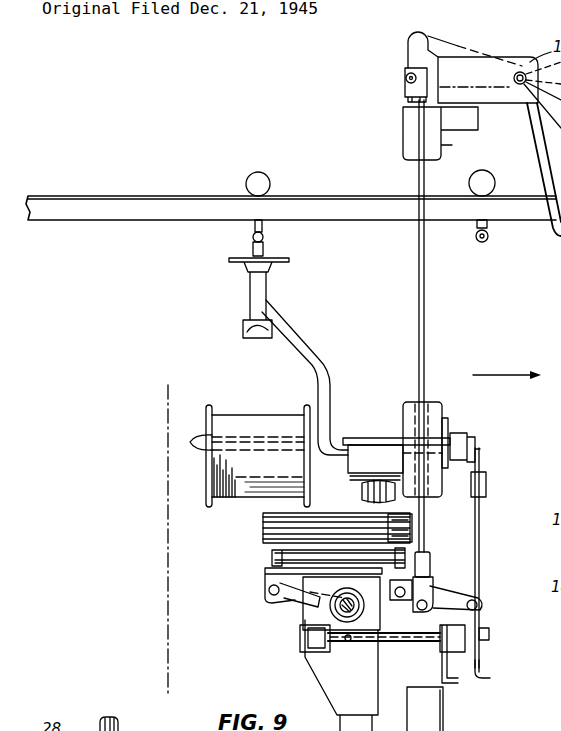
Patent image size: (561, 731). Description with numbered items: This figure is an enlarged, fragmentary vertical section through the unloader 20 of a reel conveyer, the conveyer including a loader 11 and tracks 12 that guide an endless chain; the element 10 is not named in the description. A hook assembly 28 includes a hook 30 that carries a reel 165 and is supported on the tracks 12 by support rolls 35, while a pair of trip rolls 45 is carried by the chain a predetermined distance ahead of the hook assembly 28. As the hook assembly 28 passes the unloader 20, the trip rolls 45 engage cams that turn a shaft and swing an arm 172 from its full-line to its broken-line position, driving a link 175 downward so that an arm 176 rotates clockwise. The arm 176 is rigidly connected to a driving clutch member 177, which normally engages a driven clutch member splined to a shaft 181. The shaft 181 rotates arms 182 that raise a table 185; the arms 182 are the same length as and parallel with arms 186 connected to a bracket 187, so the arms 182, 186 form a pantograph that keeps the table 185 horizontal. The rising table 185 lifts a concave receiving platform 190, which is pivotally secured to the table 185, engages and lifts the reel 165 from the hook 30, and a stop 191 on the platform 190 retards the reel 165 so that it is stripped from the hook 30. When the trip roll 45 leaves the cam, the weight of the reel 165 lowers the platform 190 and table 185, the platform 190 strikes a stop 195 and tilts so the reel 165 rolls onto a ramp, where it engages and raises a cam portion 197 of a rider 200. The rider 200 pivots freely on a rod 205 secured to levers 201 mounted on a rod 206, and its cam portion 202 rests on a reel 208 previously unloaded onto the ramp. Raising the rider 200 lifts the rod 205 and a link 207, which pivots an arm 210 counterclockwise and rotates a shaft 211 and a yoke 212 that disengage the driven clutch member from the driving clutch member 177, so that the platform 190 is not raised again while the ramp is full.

The supporting rail structure 10 is at (165, 224).
The tracks 12 is at (150, 196).
The support rolls 35 is at (270, 183).
The trip rolls 45 is at (486, 243).
The arm 172 is at (432, 48).
The unloader 20 is at (402, 159).
The link 175 is at (417, 276).
The hook assembly 28 is at (248, 300).
The hook 30 is at (306, 332).
The loader 11 is at (167, 392).
The reel 165 is at (210, 405).
The rod 205 is at (344, 442).
The rider 200 is at (372, 450).
The rod 206 is at (394, 430).
The cam portion 202 is at (360, 490).
The cam portion 197 is at (376, 498).
The levers 201 is at (470, 438).
The reel 208 is at (396, 508).
The link 207 is at (482, 534).
The shaft 211 is at (490, 635).
The arm 210 is at (488, 677).
The receiving platform 190 is at (262, 528).
The stop 191 is at (414, 525).
The stop 195 is at (270, 553).
The table 185 is at (265, 577).
The arms 182 is at (297, 605).
The arm 176 is at (383, 617).
The yoke 212 is at (302, 662).
The shaft 181 is at (302, 612).
The driving clutch member 177 is at (310, 630).
The arm 186 is at (452, 592).
The bracket 187 is at (477, 620).